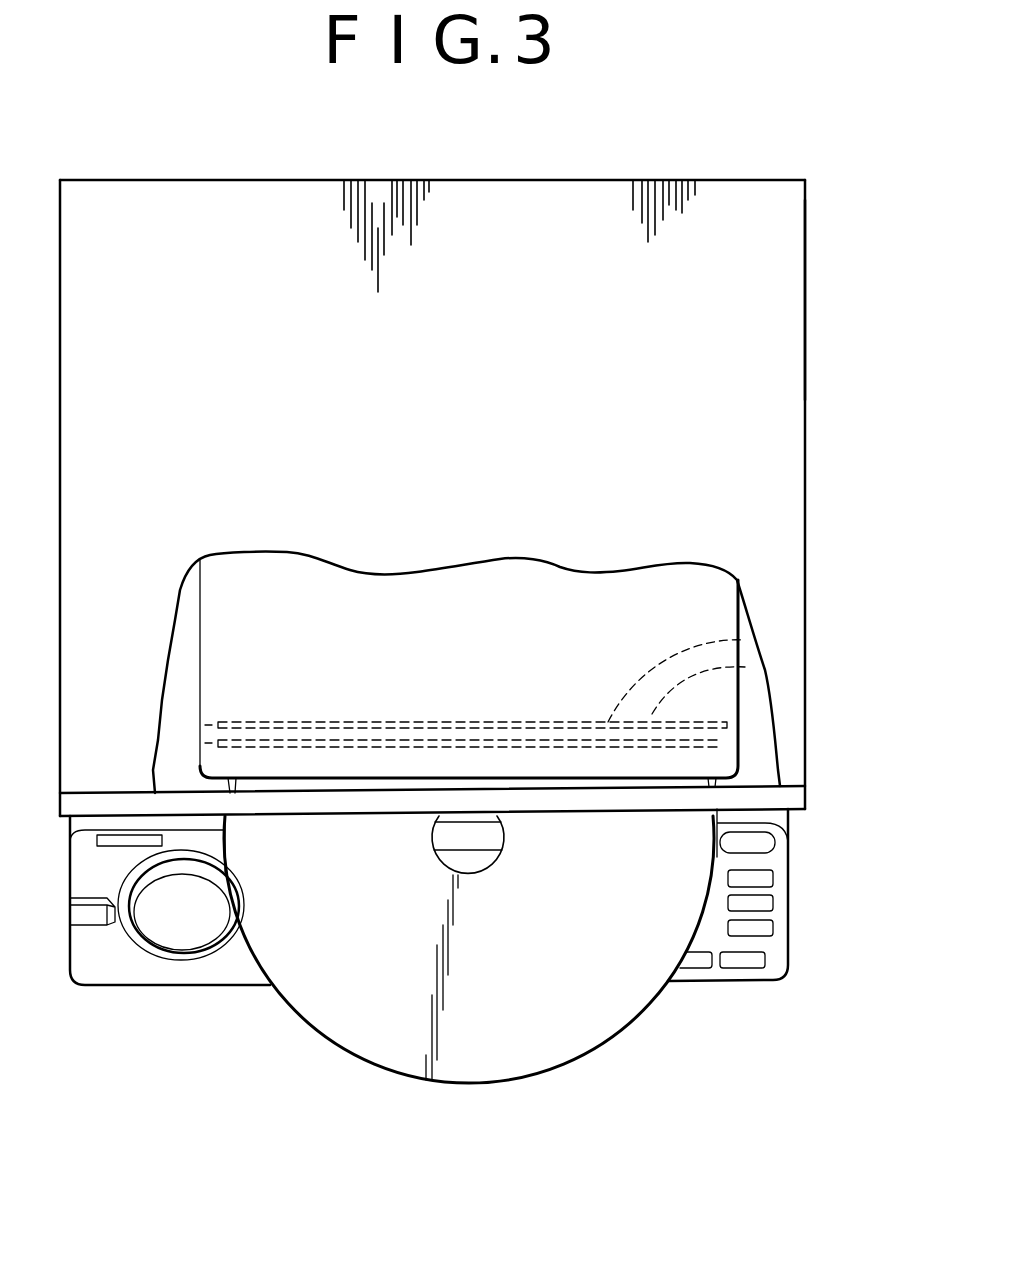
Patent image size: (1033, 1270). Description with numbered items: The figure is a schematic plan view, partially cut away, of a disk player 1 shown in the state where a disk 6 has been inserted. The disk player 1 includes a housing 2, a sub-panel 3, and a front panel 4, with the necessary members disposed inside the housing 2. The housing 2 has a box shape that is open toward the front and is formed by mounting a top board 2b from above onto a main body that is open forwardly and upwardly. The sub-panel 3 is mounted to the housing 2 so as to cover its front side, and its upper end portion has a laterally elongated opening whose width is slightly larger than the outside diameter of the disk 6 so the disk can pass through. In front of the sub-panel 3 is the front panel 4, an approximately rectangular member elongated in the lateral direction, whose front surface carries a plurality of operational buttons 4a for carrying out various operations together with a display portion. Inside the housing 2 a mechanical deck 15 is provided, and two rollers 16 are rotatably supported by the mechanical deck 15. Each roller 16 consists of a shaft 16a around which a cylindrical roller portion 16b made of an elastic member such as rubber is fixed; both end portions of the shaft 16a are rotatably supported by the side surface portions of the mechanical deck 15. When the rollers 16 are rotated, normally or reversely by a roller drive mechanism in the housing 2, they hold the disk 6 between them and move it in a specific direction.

The disk player 1 is at (788, 118).
The housing 2 is at (783, 342).
The top board 2b is at (783, 262).
The sub-panel 3 is at (795, 797).
The front panel 4 is at (140, 968).
The operational buttons 4a is at (767, 903).
The disk 6 is at (577, 1035).
The mechanical deck 15 is at (718, 605).
The rollers 16 is at (745, 667).
The shaft 16a is at (727, 720).
The cylindrical roller portion 16b is at (745, 640).